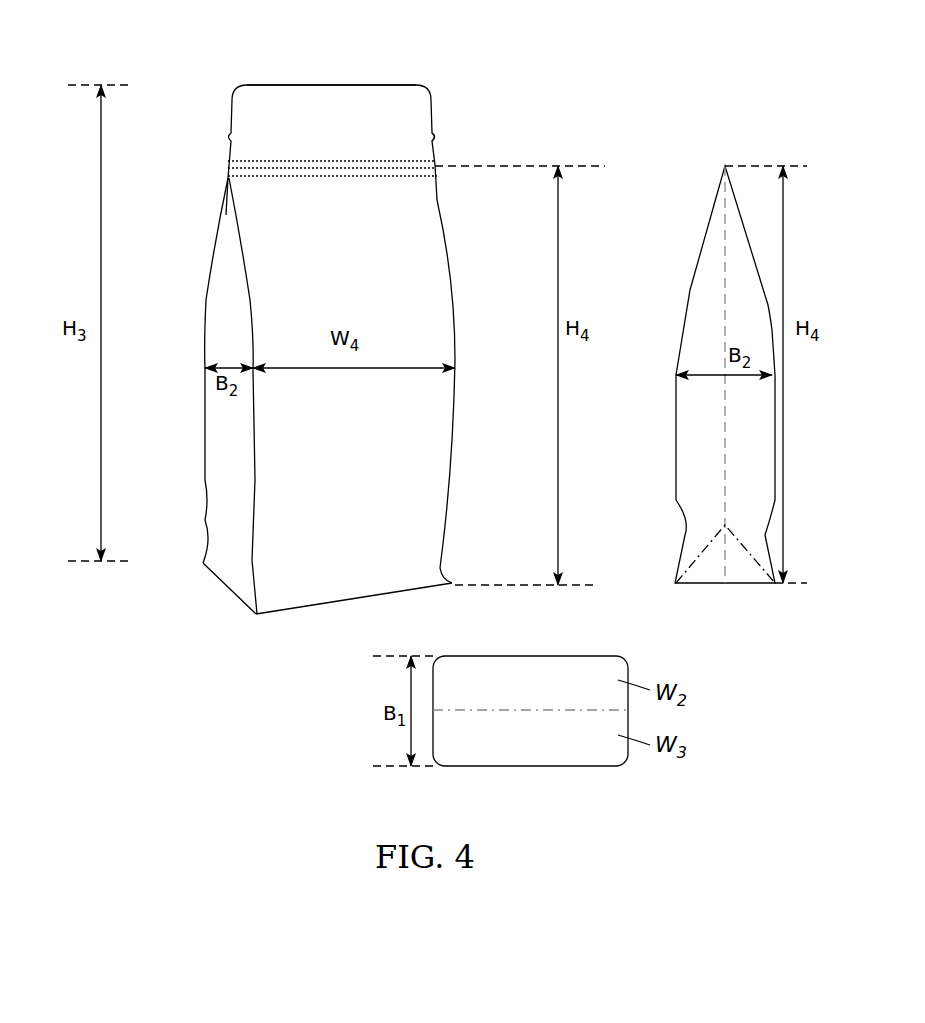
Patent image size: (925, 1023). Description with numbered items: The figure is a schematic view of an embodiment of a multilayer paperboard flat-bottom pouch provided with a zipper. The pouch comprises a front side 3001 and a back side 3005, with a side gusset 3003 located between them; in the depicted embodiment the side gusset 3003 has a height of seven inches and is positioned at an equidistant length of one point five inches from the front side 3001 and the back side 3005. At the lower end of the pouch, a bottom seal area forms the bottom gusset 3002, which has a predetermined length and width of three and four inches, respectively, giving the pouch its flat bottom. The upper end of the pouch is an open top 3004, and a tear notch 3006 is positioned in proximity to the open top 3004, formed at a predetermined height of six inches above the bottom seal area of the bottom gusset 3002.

The front side 3001 is at (405, 358).
The bottom gusset 3002 is at (225, 592).
The side gusset 3003 is at (238, 358).
The open top 3004 is at (338, 115).
The back side 3005 is at (222, 207).
The tear notch 3006 is at (437, 137).